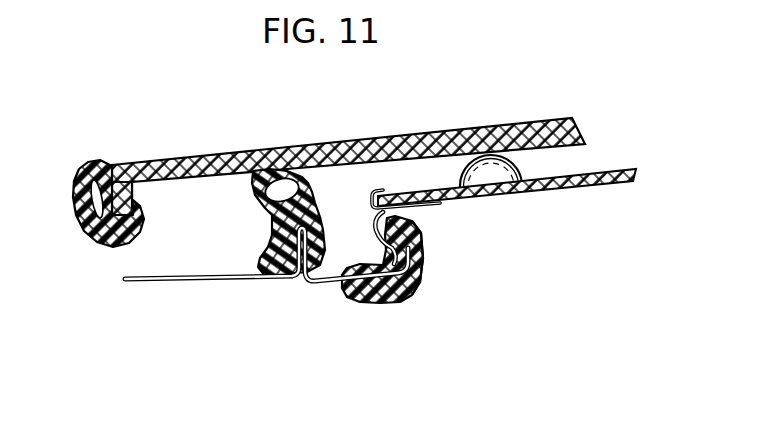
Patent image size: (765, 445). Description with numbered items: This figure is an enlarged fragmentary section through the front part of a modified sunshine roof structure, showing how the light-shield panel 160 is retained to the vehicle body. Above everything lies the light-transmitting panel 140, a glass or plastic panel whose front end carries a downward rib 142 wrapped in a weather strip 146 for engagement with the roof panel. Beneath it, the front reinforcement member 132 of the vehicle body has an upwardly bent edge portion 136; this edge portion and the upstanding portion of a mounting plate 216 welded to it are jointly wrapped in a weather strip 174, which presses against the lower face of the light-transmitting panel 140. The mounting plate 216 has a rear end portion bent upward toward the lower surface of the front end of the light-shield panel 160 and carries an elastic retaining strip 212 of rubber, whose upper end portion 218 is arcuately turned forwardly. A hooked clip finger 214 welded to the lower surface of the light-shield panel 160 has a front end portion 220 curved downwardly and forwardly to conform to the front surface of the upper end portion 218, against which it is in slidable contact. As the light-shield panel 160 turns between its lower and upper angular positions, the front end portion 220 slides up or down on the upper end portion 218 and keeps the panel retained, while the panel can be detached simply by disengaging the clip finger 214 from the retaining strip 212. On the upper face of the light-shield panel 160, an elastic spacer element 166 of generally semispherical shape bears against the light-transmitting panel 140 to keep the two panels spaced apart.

The front reinforcement member 132 is at (192, 283).
The upwardly bent edge portion 136 is at (292, 285).
The light-transmitting panel 140 is at (192, 153).
The downward projection or rib 142 is at (134, 190).
The weather strip 146 is at (90, 234).
The light-shield panel 160 is at (568, 188).
The elastic spacer element 166 is at (523, 171).
The weather strip 174 is at (268, 227).
The elastic retaining strip 212 is at (400, 303).
The hooked clip finger 214 is at (440, 207).
The mounting plate 216 is at (313, 284).
The upper end portion 218 is at (423, 232).
The front end portion 220 is at (383, 250).